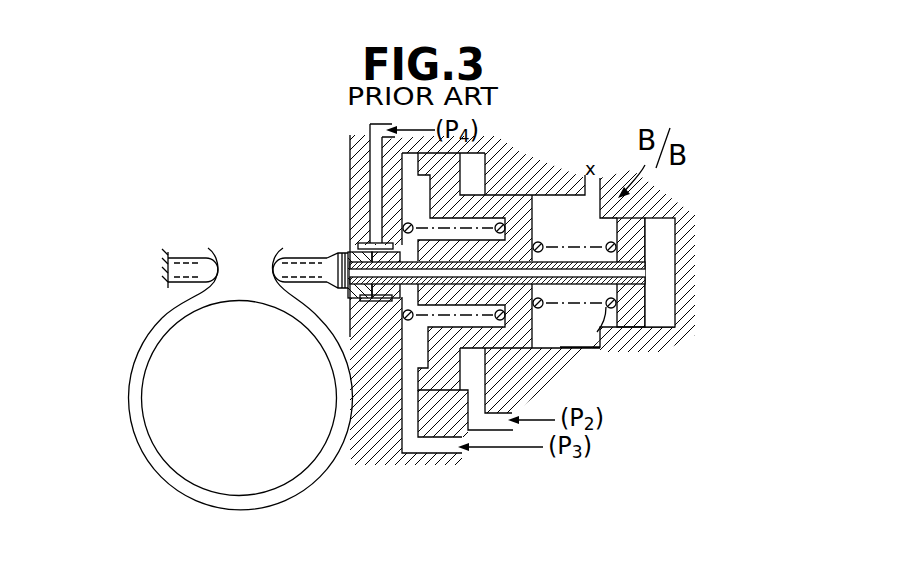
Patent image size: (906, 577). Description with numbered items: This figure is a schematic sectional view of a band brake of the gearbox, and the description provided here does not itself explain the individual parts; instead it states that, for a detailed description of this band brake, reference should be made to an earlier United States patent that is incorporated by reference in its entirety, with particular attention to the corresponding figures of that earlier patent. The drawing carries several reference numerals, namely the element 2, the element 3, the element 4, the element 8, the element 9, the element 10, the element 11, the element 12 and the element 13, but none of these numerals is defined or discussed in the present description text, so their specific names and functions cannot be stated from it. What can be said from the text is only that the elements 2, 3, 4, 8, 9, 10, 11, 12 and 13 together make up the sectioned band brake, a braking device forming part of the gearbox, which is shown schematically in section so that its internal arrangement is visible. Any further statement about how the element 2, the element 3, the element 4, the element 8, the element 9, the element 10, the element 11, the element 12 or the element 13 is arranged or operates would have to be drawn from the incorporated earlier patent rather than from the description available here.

The lower housing / slave cylinder body (2 S/A) 2 is at (473, 370).
The piston / spool (3 S/R) 3 is at (412, 190).
The end plate / slave actuator (4 S/A) 4 is at (665, 278).
The housing 8 is at (522, 203).
The piston block 9 is at (632, 313).
The right housing body 10 is at (688, 226).
The seal 11 is at (612, 335).
The seal / spring 12 is at (428, 305).
The clamp ring 13 is at (133, 428).